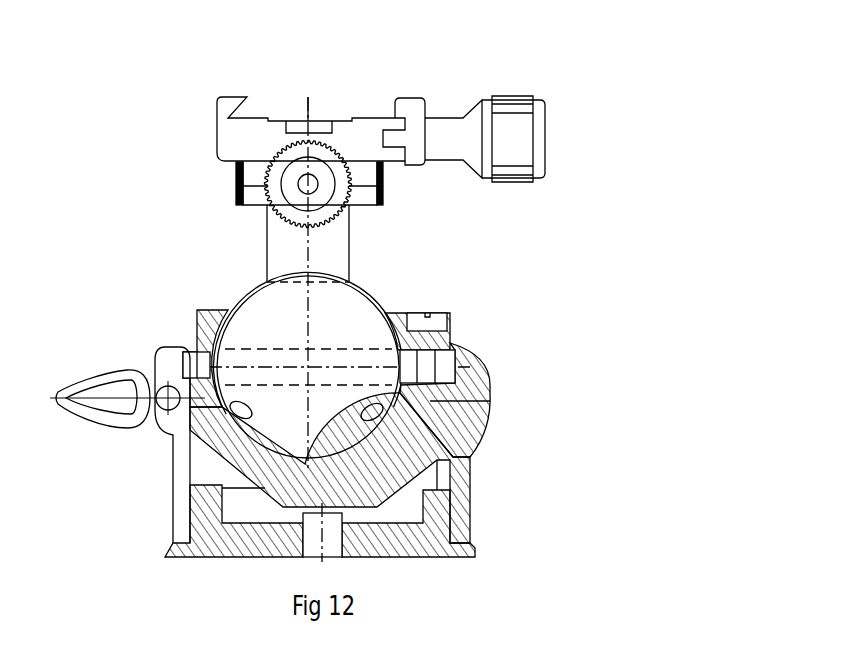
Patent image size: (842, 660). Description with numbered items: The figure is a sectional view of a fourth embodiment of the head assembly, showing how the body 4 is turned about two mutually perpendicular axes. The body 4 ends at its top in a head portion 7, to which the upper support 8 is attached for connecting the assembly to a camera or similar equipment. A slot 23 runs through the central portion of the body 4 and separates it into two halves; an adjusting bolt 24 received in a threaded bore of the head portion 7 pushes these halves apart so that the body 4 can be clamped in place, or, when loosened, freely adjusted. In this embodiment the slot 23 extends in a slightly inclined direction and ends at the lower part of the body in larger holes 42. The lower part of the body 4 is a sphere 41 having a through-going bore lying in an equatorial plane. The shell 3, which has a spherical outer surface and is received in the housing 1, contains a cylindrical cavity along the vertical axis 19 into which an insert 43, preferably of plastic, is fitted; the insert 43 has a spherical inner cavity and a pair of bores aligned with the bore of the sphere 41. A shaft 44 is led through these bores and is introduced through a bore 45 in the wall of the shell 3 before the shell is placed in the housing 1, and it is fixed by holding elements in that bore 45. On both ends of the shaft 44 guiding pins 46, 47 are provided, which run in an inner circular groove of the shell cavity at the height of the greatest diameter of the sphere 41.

The housing 1 is at (495, 382).
The shell 3 is at (190, 455).
The body 4 is at (352, 215).
The head portion 7 is at (237, 175).
The upper support 8 is at (358, 117).
The symmetry axis 19 is at (300, 277).
The slot 23 is at (222, 342).
The adjusting bolt 24 is at (262, 205).
The sphere 41 is at (357, 288).
The larger holes 42 is at (365, 415).
The insert 43 is at (420, 314).
The shaft 44 is at (342, 358).
The bore 45 is at (453, 344).
The guiding pin 46 is at (455, 397).
The guiding pin 47 is at (186, 345).